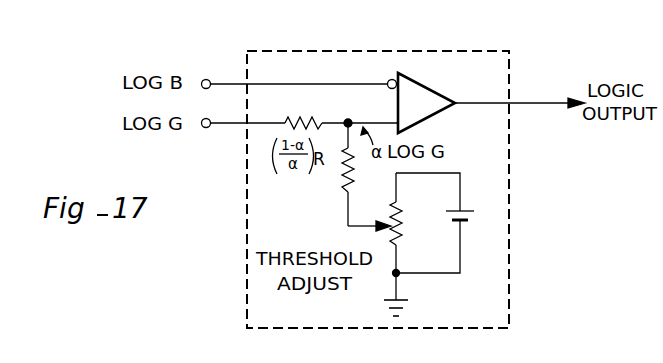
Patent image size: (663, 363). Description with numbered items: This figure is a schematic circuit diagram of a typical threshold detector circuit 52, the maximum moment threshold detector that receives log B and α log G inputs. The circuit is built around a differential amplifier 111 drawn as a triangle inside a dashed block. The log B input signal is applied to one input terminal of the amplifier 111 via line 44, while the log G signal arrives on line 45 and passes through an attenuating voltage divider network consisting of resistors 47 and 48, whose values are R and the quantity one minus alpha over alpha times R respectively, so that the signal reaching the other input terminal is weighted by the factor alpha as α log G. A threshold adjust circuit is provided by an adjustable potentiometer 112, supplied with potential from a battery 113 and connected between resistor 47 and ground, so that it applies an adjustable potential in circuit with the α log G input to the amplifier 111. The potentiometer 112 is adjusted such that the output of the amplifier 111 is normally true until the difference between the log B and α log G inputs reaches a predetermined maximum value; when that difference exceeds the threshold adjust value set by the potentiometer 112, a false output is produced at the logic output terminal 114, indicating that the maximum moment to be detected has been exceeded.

The line 44 is at (222, 79).
The line 45 is at (233, 118).
The resistor 47 is at (353, 176).
The resistor 48 is at (296, 118).
The threshold detector circuit 52 is at (383, 52).
The differential amplifier 111 is at (430, 82).
The adjustable potentiometer 112 is at (403, 240).
The battery 113 is at (479, 208).
The terminal 114 is at (562, 99).